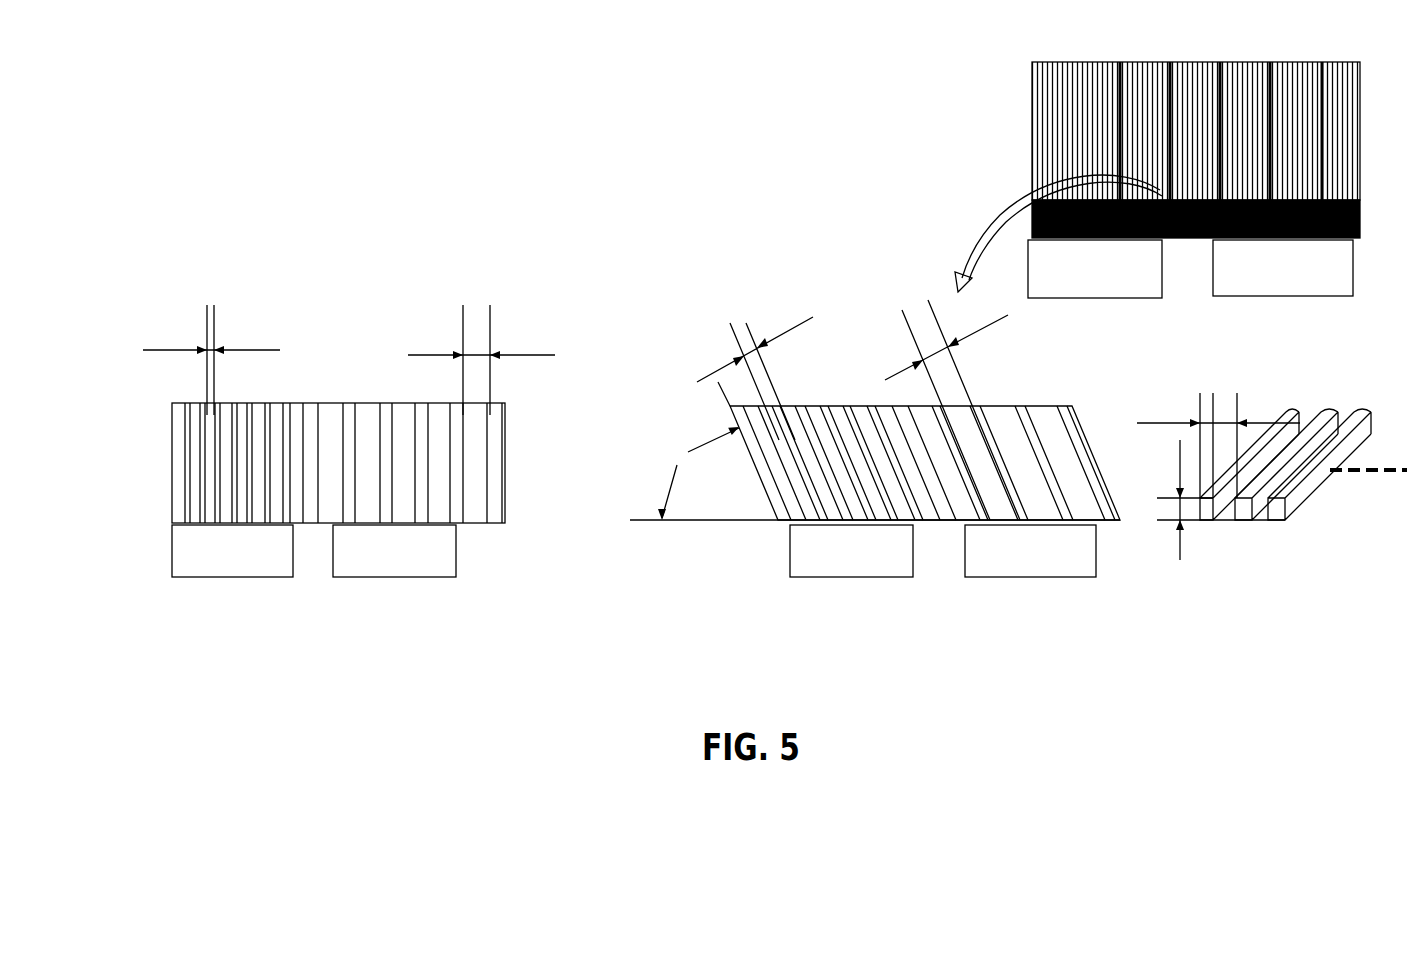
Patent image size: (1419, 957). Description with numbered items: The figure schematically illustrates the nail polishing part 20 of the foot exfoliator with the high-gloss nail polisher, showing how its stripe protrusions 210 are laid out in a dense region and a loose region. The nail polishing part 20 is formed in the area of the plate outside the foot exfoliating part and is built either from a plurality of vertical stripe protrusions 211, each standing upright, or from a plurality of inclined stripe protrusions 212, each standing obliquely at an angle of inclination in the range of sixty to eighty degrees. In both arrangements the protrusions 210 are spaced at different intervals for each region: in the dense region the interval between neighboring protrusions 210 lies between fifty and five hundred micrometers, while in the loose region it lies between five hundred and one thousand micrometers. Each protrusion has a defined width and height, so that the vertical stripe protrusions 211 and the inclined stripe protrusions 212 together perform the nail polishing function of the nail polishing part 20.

The nail polishing part 20 is at (107, 146).
The stripe protrusions 210 is at (1197, 240).
The vertical stripe protrusions 211 is at (383, 447).
The inclined stripe protrusions 212 is at (783, 520).